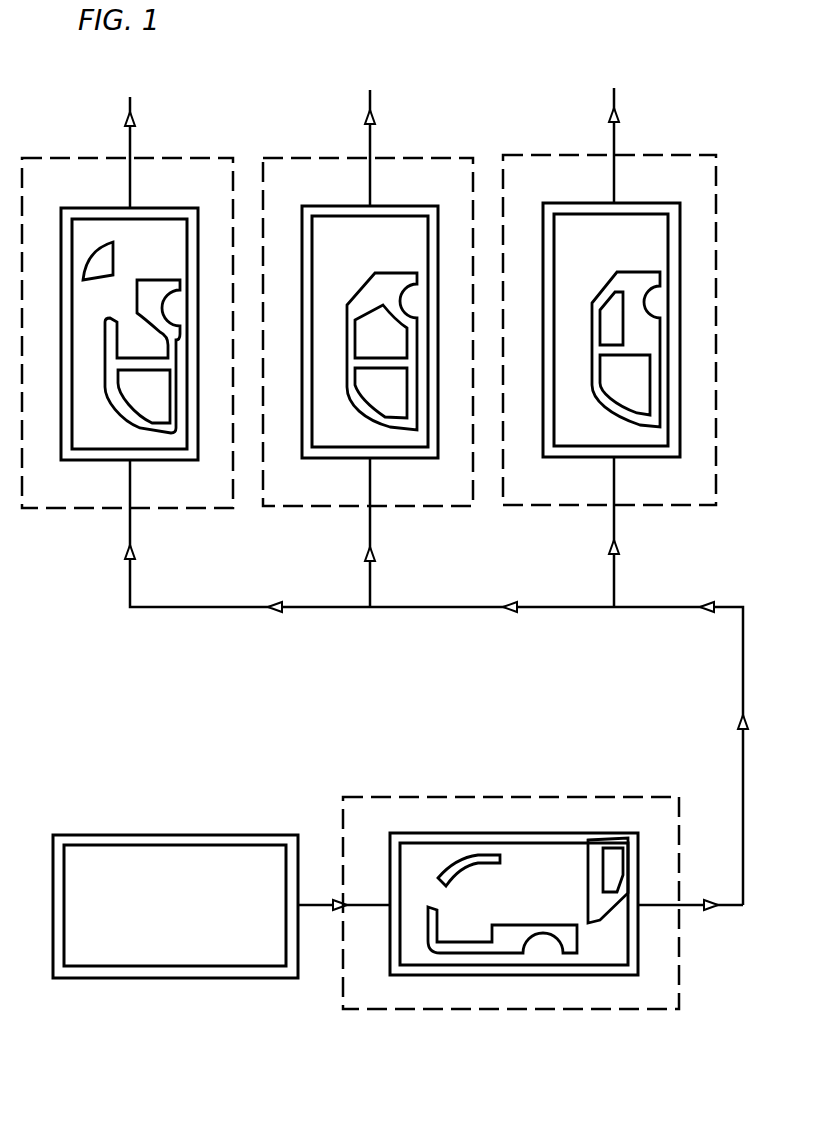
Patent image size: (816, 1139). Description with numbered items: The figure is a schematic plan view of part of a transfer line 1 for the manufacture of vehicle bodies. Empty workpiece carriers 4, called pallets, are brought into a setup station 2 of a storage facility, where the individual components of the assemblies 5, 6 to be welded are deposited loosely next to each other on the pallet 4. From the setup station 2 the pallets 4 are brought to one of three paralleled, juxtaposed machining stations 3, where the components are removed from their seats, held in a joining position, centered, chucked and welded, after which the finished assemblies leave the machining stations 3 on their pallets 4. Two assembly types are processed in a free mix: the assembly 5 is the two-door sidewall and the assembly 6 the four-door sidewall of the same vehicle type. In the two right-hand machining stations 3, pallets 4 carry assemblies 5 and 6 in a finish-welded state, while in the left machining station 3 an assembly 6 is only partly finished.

The transfer line 1 is at (588, 80).
The setup station 2 is at (601, 1010).
The machining station 3 is at (666, 155).
The workpiece carrier 4 is at (187, 836).
The assembly 5 is at (640, 426).
The assembly 6 is at (104, 430).